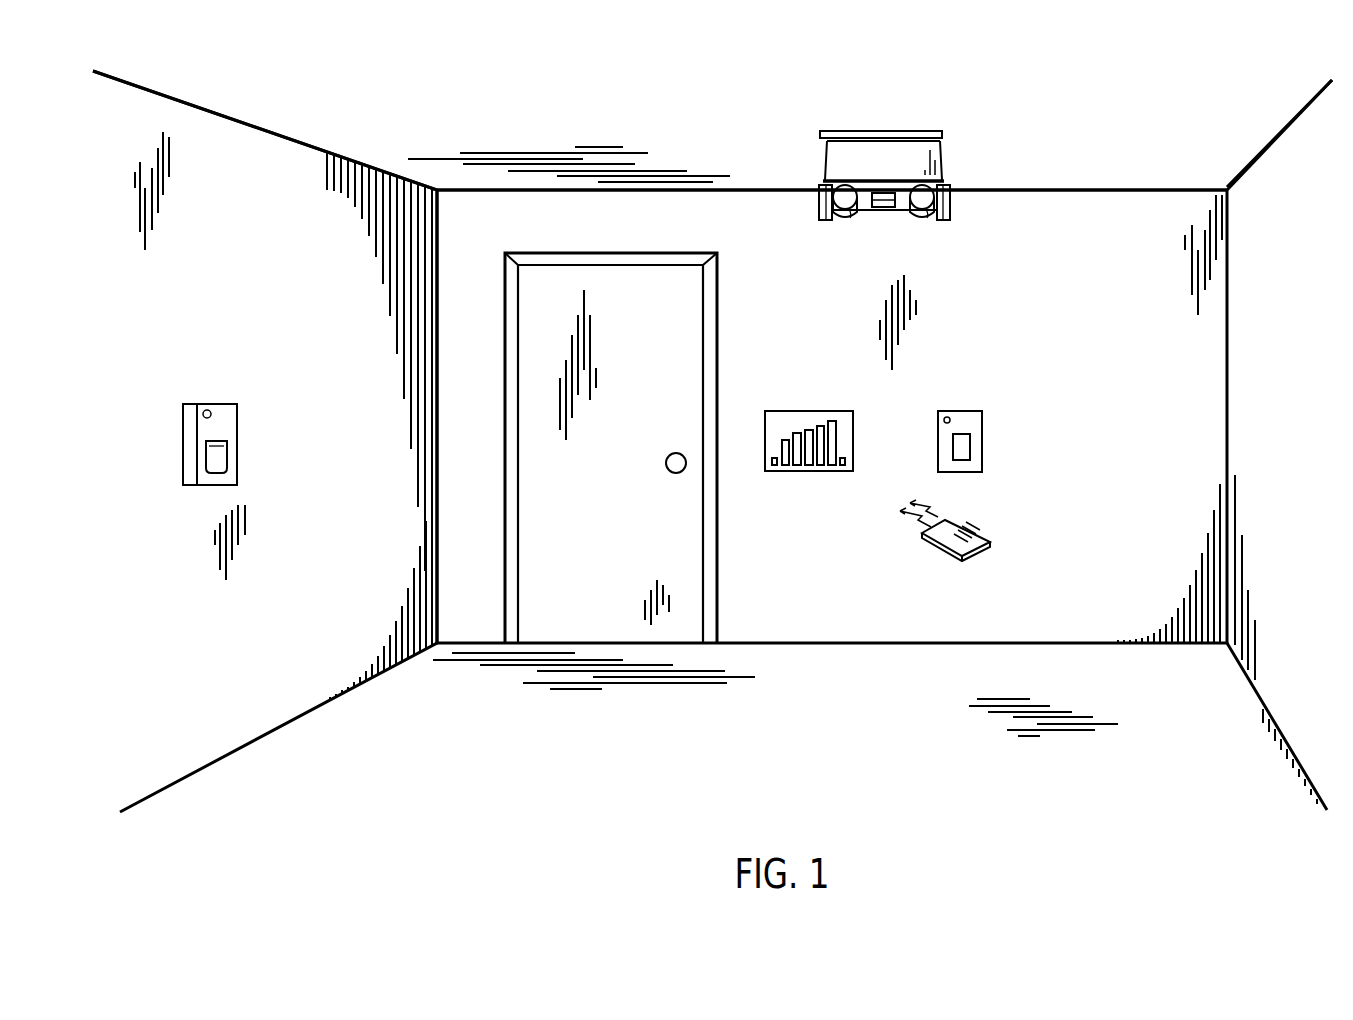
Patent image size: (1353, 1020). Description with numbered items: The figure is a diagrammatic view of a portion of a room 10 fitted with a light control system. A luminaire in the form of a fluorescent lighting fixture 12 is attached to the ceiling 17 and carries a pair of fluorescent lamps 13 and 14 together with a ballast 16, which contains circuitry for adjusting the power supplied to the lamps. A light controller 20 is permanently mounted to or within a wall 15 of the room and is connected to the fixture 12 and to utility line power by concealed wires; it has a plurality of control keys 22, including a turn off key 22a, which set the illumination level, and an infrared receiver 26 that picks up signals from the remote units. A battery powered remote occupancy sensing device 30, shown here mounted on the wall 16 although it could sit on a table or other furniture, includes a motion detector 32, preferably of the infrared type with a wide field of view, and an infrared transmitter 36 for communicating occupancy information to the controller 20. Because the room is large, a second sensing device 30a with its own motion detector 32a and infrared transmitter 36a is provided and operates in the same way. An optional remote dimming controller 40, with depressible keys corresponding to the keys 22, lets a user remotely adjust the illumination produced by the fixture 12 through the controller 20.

The room 10 is at (1064, 332).
The fluorescent lighting fixture 12 is at (864, 199).
The fluorescent lamp 13 is at (850, 220).
The fluorescent lamp 14 is at (920, 220).
The wall 15 is at (848, 627).
The ballast 16 is at (270, 718).
The ceiling 17 is at (755, 176).
The light controller 20 is at (792, 444).
The control keys 22 is at (783, 440).
The turn off key 22a is at (763, 459).
The infrared receiver 26 is at (843, 466).
The remote occupancy sensing device 30 is at (198, 442).
The motion detector 32 is at (220, 455).
The infrared transmitter 36 is at (207, 410).
The remote occupancy sensing device 30a is at (989, 419).
The motion detector 32a is at (963, 450).
The infrared transmitter 36a is at (947, 417).
The remote dimming controller 40 is at (990, 542).